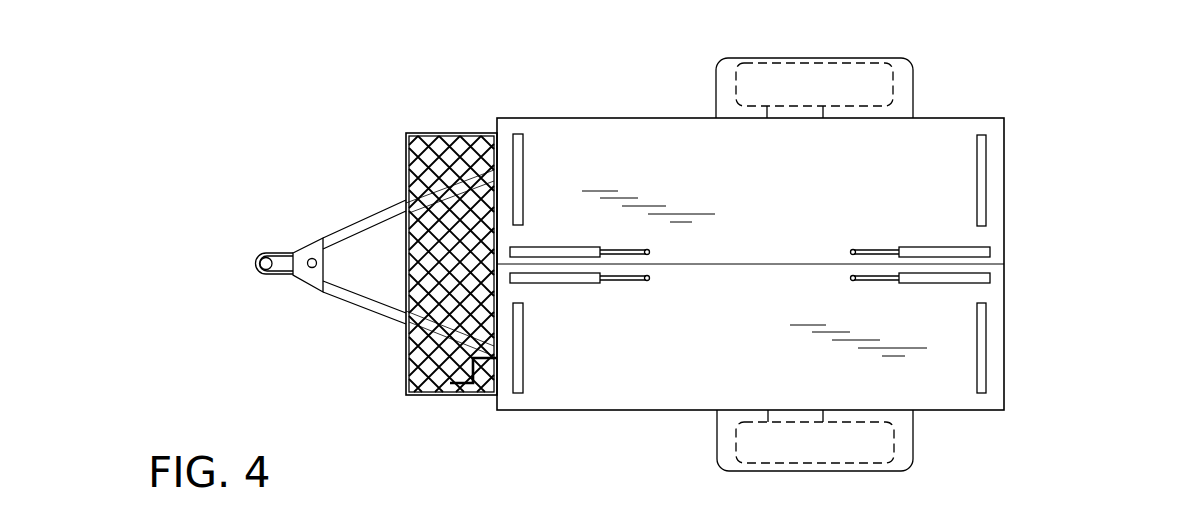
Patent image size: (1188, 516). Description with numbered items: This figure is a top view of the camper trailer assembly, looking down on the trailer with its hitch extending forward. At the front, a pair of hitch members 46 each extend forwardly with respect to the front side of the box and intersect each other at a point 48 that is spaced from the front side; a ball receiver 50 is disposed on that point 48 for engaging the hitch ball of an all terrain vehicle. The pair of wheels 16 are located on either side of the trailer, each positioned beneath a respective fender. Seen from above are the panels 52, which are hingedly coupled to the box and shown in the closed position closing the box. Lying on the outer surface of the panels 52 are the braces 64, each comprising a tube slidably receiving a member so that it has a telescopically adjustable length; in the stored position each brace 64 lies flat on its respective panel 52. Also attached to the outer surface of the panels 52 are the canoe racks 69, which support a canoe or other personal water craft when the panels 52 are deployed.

The wheels 16 is at (703, 515).
The hitch members 46 is at (358, 220).
The point 48 is at (300, 278).
The ball receiver 50 is at (257, 255).
The panels 52 is at (555, 363).
The braces 64 is at (1004, 276).
The canoe racks 69 is at (522, 137).